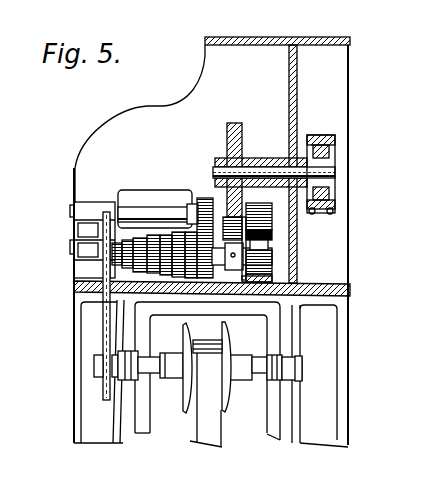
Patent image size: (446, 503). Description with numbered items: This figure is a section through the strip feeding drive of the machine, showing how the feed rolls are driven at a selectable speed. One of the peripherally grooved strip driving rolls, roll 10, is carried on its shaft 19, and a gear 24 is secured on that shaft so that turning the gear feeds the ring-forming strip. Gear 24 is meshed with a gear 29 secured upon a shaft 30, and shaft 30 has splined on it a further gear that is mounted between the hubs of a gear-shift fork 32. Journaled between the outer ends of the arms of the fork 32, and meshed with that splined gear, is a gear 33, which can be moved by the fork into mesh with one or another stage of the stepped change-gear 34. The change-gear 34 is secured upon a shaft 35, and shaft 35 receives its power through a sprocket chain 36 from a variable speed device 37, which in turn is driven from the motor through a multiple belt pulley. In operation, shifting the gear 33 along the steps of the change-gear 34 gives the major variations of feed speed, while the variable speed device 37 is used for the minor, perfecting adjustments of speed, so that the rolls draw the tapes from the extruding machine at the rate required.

The strip driving roll 10 is at (335, 142).
The shaft 19 is at (335, 172).
The gear 24 is at (242, 137).
The gear 29 is at (272, 243).
The shaft 30 is at (136, 207).
The gear-shift fork 32 is at (192, 205).
The gear 33 is at (205, 198).
The change-gear 34 is at (163, 207).
The shaft 35 is at (273, 257).
The sprocket chain 36 is at (107, 322).
The variable speed device 37 is at (196, 419).